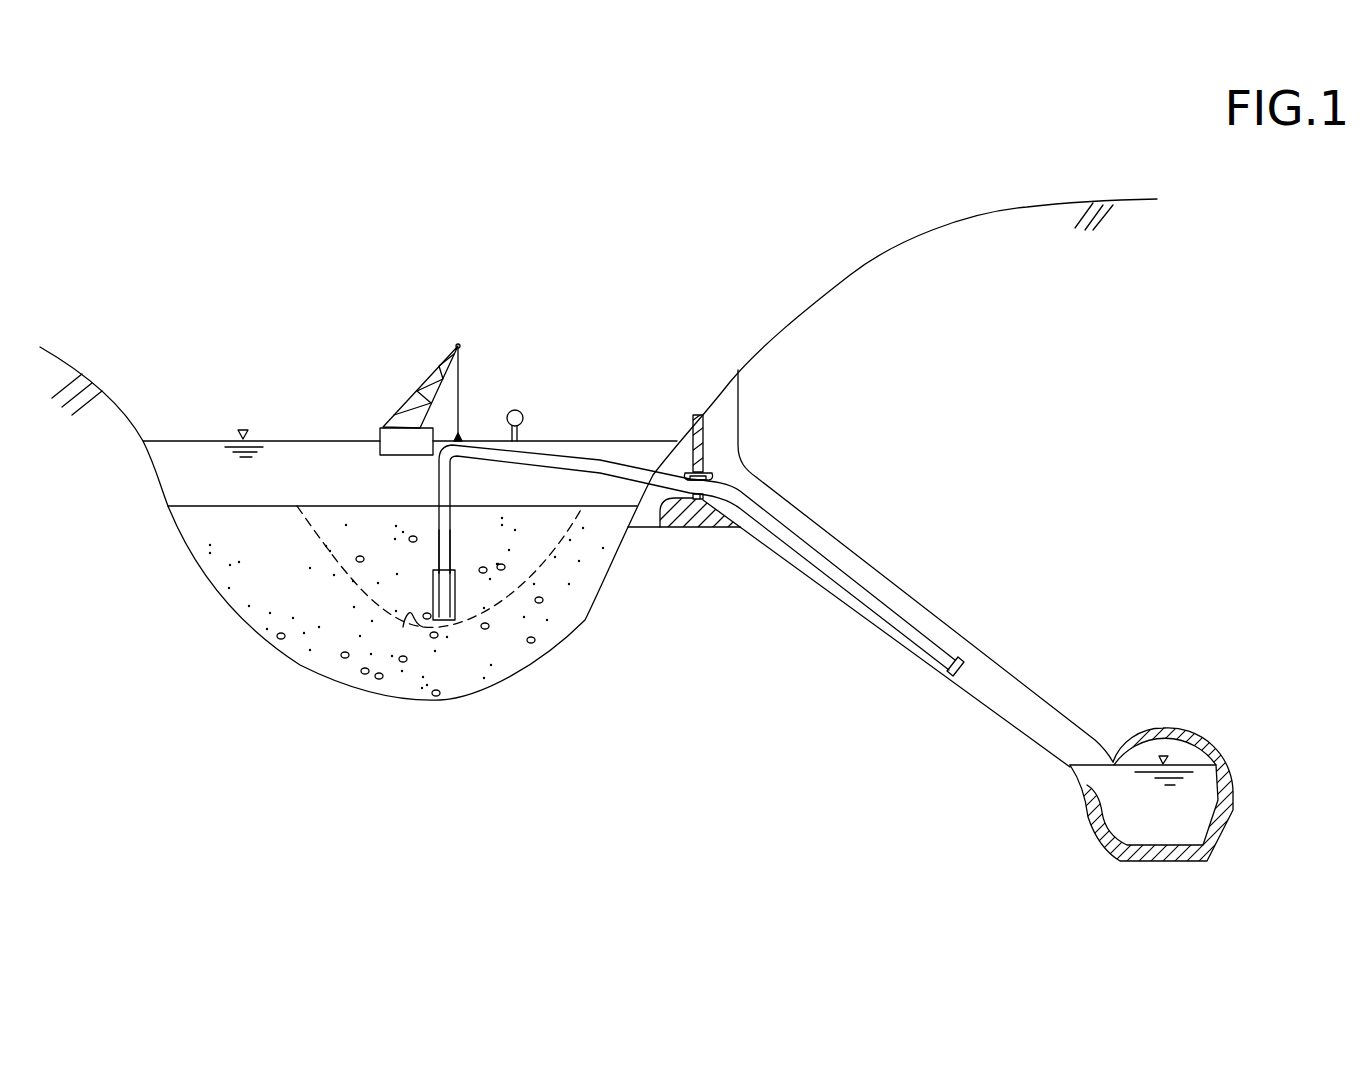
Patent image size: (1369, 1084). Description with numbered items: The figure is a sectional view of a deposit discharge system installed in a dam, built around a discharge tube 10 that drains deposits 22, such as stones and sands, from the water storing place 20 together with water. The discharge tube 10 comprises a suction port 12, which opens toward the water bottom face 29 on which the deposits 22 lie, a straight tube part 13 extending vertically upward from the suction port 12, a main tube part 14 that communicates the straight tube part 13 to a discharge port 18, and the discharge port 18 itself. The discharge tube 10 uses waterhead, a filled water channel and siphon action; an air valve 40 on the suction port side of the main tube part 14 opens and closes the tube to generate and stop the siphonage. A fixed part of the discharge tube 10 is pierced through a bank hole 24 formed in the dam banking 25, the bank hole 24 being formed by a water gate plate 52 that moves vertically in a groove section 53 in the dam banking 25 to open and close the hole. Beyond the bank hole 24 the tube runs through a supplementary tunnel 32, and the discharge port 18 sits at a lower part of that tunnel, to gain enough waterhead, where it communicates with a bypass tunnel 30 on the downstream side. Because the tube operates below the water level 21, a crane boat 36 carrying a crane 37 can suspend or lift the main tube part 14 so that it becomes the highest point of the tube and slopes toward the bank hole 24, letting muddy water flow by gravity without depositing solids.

The discharge tube 10 is at (600, 461).
The suction port 12 is at (444, 622).
The straight tube part 13 is at (437, 530).
The main tube part 14 is at (561, 468).
The discharge port 18 is at (964, 672).
The water storing place 20 is at (208, 465).
The water level 21 is at (172, 440).
The deposits 22 is at (277, 530).
The bank hole 24 is at (700, 527).
The dam banking 25 is at (704, 401).
The water bottom face 29 is at (405, 626).
The bypass tunnel 30 is at (1212, 776).
The supplementary tunnel 32 is at (1010, 676).
The crane boat 36 is at (403, 437).
The crane 37 is at (458, 377).
The air valve 40 is at (515, 410).
The water gate plate 52 is at (705, 442).
The groove section 53 is at (690, 472).